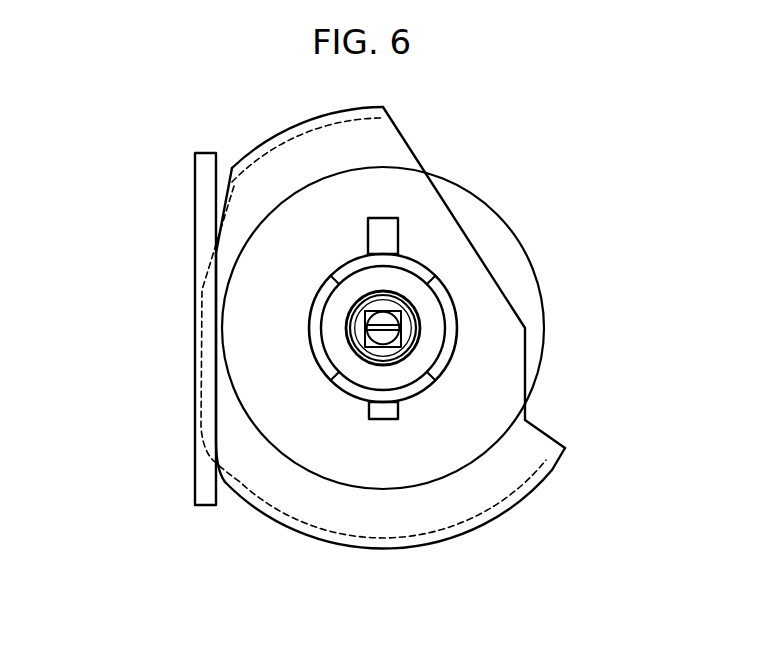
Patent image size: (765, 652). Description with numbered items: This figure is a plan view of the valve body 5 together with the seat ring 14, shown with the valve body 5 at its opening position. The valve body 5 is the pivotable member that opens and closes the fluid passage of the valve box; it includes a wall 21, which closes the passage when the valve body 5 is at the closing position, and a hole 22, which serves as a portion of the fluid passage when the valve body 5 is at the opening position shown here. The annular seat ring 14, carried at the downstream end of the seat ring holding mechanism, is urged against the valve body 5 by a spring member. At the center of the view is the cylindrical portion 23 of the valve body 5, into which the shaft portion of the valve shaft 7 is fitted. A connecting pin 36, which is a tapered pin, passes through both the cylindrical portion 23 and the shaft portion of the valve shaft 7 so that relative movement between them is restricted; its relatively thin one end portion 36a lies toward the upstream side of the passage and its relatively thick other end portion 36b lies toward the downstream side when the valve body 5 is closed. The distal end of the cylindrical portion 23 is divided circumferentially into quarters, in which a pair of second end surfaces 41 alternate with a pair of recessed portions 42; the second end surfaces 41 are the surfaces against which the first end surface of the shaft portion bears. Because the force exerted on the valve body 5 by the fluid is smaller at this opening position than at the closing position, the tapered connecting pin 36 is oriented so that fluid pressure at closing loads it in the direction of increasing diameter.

The valve body 5 is at (288, 128).
The valve shaft 7 is at (452, 338).
The seat ring 14 is at (195, 172).
The wall 21 is at (505, 515).
The hole 22 is at (232, 215).
The cylindrical portion 23 is at (455, 295).
The connecting pin 36 is at (398, 232).
The one end portion 36a is at (370, 416).
The other end portion 36b is at (385, 228).
The second end surfaces 41 is at (312, 320).
The recessed portions 42 is at (333, 388).